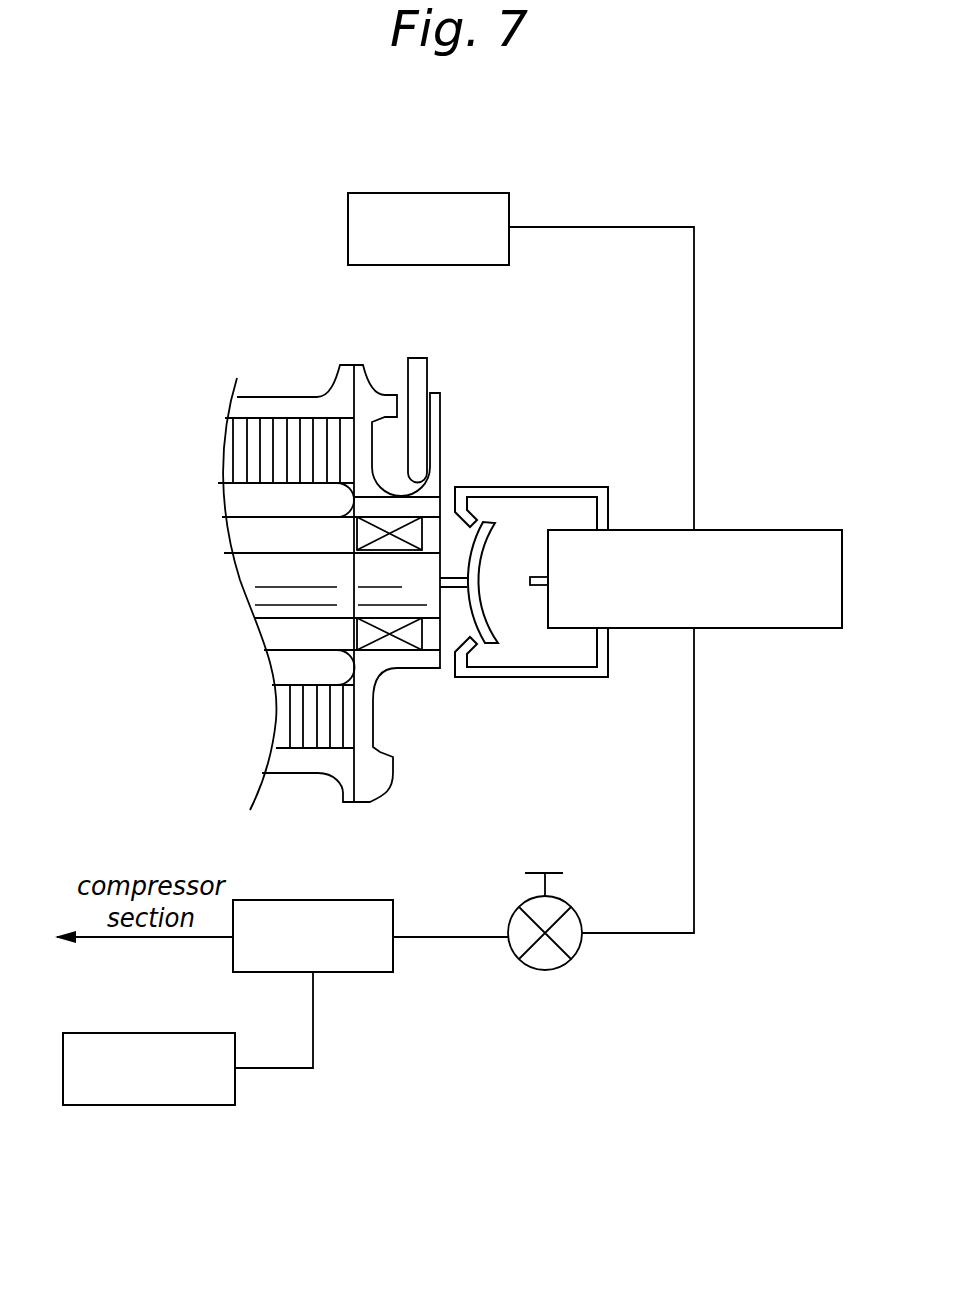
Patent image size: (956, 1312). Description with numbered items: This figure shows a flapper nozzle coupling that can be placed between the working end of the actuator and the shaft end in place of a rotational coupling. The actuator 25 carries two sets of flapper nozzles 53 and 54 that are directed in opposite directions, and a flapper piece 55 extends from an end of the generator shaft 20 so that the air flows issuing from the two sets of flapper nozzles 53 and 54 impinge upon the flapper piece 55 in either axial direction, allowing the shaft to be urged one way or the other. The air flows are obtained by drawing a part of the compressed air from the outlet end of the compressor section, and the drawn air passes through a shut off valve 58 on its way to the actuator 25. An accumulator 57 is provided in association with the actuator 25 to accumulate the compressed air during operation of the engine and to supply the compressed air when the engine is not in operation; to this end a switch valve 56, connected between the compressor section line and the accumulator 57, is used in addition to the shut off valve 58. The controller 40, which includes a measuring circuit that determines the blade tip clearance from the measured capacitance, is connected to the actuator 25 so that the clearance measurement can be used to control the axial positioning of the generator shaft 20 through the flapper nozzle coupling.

The generator shaft 20 is at (260, 567).
The actuator 25 is at (787, 628).
The controller 40 is at (468, 193).
The flapper nozzle 53 is at (537, 577).
The flapper nozzle 54 is at (473, 652).
The flapper piece 55 is at (490, 540).
The switch valve 56 is at (332, 900).
The accumulator 57 is at (193, 1105).
The shut off valve 58 is at (563, 963).